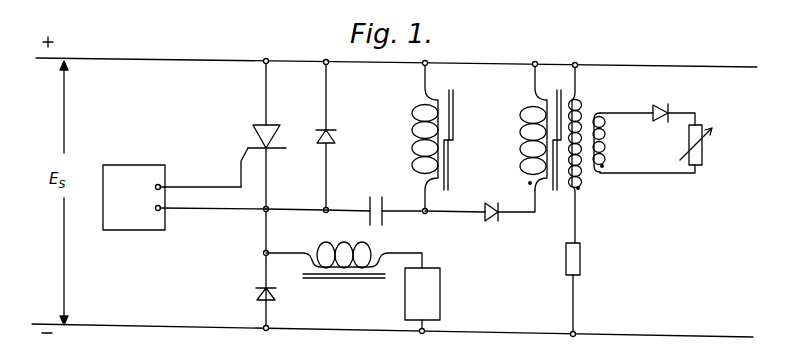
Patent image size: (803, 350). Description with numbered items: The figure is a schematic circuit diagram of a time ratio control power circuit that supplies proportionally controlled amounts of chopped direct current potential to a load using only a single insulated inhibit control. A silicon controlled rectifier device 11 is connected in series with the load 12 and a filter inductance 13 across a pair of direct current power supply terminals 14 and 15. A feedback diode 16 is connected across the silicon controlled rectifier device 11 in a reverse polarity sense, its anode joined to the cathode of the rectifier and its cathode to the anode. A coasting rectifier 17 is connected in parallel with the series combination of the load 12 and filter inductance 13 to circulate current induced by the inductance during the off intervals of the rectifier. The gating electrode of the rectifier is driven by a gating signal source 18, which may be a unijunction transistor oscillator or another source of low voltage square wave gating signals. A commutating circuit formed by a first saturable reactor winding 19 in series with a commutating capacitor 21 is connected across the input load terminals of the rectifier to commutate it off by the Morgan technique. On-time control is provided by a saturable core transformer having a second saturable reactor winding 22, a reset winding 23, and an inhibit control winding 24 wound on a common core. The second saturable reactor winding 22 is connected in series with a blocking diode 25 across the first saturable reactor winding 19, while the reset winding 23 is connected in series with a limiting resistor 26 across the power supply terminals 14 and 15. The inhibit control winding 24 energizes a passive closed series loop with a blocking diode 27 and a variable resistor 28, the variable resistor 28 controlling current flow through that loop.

The silicon controlled rectifier device 11 is at (253, 129).
The load 12 is at (441, 282).
The filter inductance 13 is at (375, 246).
The direct current power supply terminal 14 is at (140, 54).
The direct current power supply terminal 15 is at (155, 326).
The feedback diode 16 is at (337, 136).
The coasting rectifier 17 is at (276, 292).
The gating signal source 18 is at (132, 165).
The first saturable reactor winding 19 is at (412, 112).
The commutating capacitor 21 is at (367, 201).
The second saturable reactor winding 22 is at (520, 114).
The reset winding 23 is at (580, 103).
The inhibit control winding 24 is at (606, 136).
The blocking diode 25 is at (497, 222).
The limiting resistor 26 is at (581, 256).
The blocking diode 27 is at (672, 110).
The variable resistor 28 is at (704, 156).